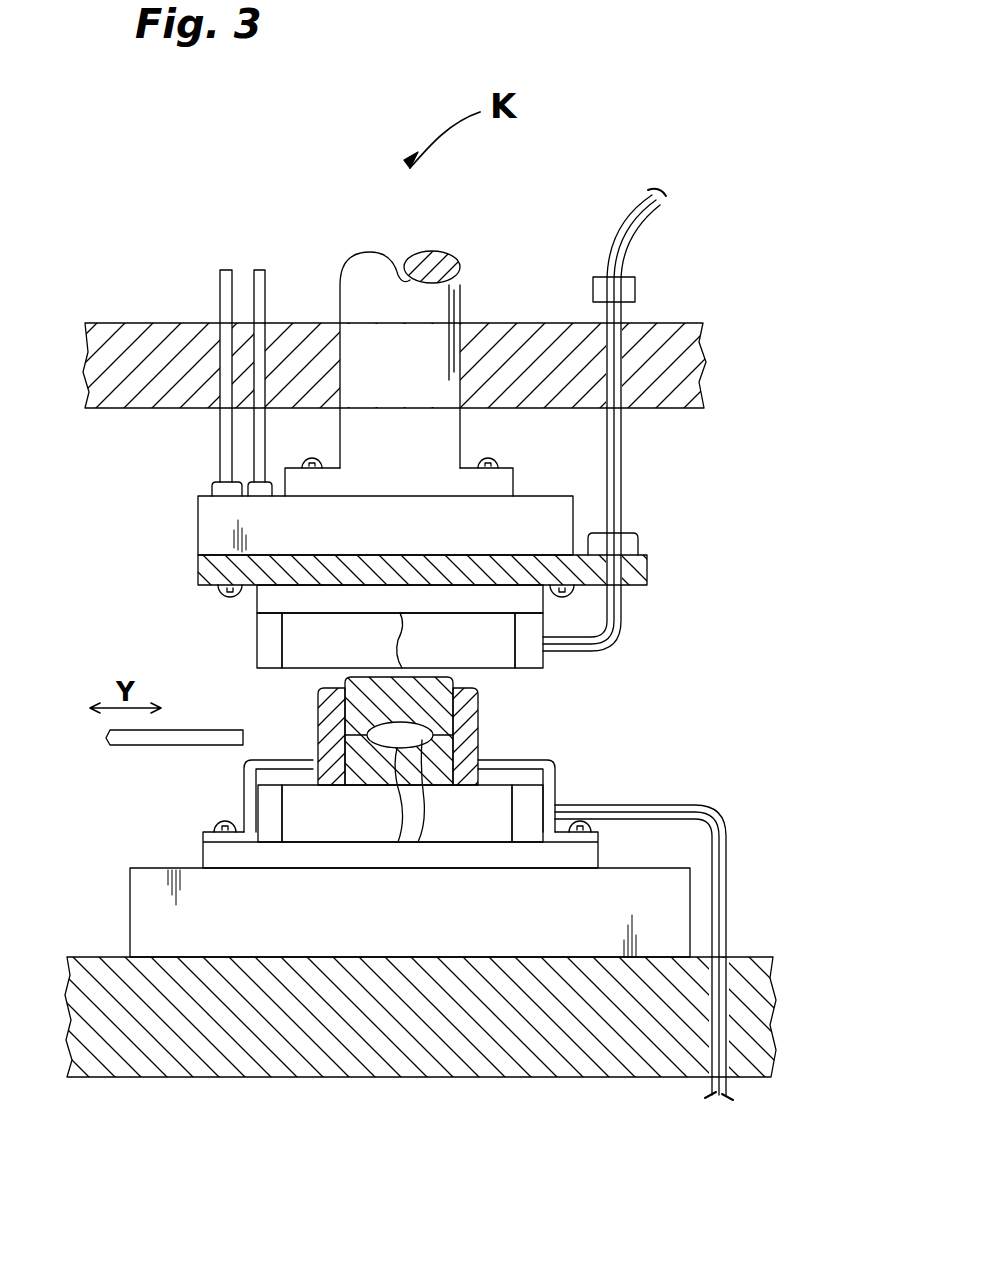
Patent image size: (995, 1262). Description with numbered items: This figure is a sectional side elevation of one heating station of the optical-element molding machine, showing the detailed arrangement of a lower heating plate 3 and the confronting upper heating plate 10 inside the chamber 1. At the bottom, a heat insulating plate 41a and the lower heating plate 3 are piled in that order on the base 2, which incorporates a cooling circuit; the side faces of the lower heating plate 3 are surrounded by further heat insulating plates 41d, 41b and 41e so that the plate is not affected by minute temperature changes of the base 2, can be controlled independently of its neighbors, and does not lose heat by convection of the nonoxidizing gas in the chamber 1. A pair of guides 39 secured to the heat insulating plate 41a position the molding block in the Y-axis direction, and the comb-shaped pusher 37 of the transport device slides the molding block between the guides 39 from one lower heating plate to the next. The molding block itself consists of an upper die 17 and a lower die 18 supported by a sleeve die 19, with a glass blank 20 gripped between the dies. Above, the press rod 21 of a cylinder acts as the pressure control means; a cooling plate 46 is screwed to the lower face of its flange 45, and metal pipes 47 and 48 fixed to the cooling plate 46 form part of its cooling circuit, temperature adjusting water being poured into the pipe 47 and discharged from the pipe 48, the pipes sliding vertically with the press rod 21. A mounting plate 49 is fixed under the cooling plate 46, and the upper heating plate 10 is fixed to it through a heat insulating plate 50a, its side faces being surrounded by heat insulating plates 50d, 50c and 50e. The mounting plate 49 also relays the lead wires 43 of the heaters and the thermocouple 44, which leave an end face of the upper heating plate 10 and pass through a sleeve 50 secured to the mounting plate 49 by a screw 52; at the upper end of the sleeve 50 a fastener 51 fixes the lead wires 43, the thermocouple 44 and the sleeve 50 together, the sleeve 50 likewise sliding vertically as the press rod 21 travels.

The chamber 1 is at (680, 335).
The base 2 is at (148, 900).
The lower heating plate 3 is at (409, 853).
The upper heating plate 10 is at (425, 651).
The upper die 17 is at (480, 698).
The lower die 18 is at (346, 752).
The sleeve die 19 is at (482, 722).
The glass blank 20 is at (408, 845).
The press rod 21 is at (434, 252).
The pusher 37 is at (107, 740).
The guides 39 is at (240, 770).
The heat insulating plate 41a is at (215, 857).
The heat insulating plate 41b is at (475, 825).
The heat insulating plate 41d is at (268, 810).
The heat insulating plate 41e is at (533, 800).
The lead wires 43 is at (617, 612).
The thermocouple 44 is at (619, 636).
The flange 45 is at (505, 476).
The cooling plate 46 is at (218, 520).
The metal pipe 47 is at (260, 269).
The metal pipe 48 is at (226, 269).
The mounting plate 49 is at (212, 576).
The sleeve 50 is at (620, 468).
The heat insulating plate 50a is at (272, 600).
The heat insulating plate 50c is at (310, 655).
The heat insulating plate 50d is at (268, 645).
The heat insulating plate 50e is at (555, 660).
The fastener 51 is at (636, 282).
The screw 52 is at (640, 543).